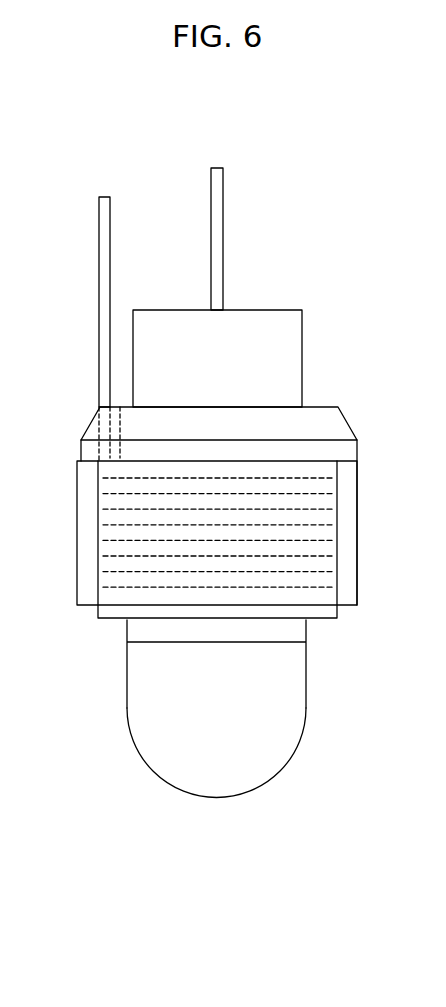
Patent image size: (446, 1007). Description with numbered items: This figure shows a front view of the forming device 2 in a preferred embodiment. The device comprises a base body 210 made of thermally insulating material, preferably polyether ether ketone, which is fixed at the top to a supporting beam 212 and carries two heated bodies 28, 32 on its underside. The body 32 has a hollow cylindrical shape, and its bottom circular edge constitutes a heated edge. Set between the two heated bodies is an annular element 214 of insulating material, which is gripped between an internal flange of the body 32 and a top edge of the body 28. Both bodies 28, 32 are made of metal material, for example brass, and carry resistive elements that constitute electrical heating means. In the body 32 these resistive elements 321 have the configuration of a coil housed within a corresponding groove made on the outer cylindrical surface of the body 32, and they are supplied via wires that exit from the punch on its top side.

The aerosol generating device 2 is at (180, 401).
The base body 210 is at (75, 528).
The supporting beam 212 is at (287, 350).
The annular element 214 is at (262, 630).
The heated body 28 is at (200, 767).
The heated body 32 is at (317, 618).
The resistive elements 321 is at (300, 533).